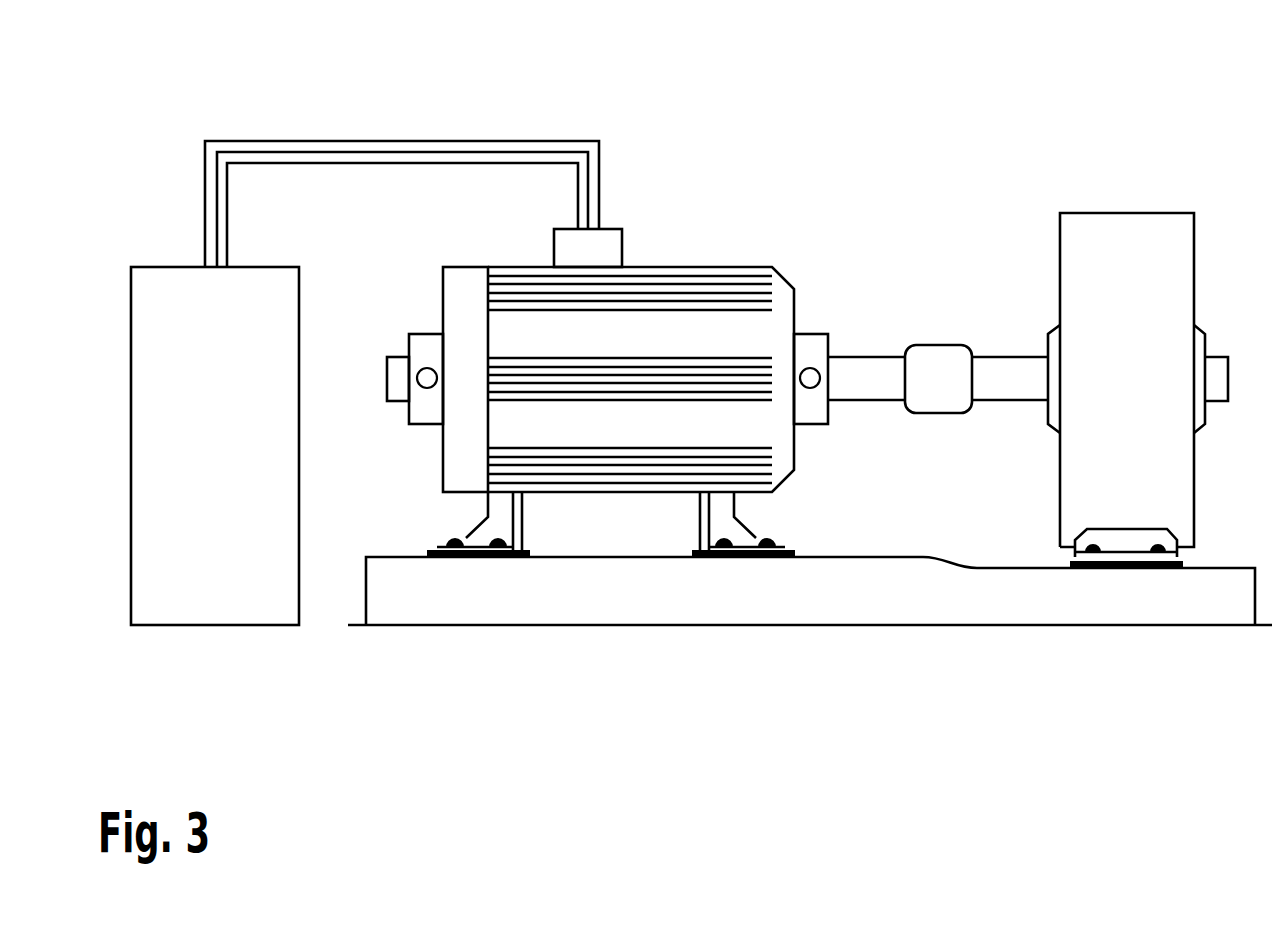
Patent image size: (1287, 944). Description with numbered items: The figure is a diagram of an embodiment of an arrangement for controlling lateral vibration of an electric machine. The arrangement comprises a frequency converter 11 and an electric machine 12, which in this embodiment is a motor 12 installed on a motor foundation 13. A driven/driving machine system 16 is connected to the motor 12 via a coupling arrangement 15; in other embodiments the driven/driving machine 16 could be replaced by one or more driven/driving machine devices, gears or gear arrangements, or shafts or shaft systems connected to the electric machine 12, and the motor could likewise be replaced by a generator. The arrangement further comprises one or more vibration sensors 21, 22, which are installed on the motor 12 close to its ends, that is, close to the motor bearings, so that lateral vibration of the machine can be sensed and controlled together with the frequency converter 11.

The frequency converter 11 is at (151, 305).
The electric machine 12 is at (741, 342).
The motor foundation 13 is at (611, 597).
The coupling arrangement 15 is at (933, 370).
The driven/driving machine system 16 is at (1106, 290).
The vibration sensor 21 is at (424, 388).
The vibration sensor 22 is at (811, 390).